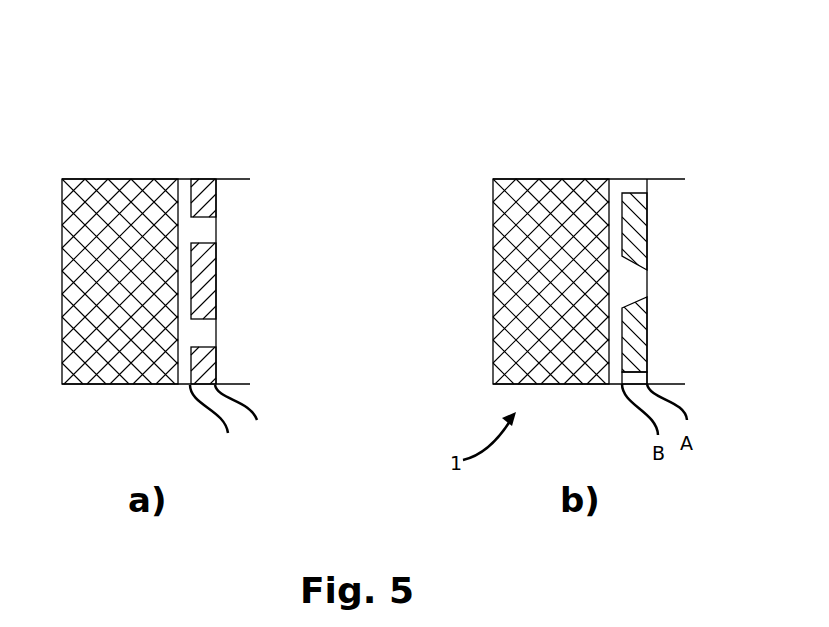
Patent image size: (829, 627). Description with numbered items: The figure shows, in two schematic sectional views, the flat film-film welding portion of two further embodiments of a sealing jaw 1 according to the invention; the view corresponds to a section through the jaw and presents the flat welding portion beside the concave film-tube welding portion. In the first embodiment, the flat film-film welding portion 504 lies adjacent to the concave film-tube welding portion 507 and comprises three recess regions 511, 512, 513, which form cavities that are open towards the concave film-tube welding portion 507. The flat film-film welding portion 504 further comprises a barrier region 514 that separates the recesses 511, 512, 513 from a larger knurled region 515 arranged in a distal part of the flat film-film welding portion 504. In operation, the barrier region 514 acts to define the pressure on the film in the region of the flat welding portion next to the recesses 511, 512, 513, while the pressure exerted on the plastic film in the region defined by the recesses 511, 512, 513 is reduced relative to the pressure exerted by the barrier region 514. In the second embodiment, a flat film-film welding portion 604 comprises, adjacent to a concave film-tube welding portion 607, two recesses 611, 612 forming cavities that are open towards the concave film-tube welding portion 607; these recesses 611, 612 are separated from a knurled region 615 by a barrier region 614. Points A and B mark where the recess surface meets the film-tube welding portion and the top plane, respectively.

The sealing jaw 1 is at (84, 416).
The flat film-film welding portion 504 is at (215, 85).
The concave film-tube welding portion 507 is at (318, 85).
The recess region 511 is at (210, 357).
The recess region 512 is at (208, 282).
The recess region 513 is at (205, 194).
The barrier region 514 is at (192, 231).
The knurled region 515 is at (115, 262).
The flat film-film welding portion 604 is at (645, 85).
The concave film-tube welding portion 607 is at (748, 85).
The recess 611 is at (637, 327).
The recess 612 is at (633, 223).
The barrier region 614 is at (627, 279).
The knurled region 615 is at (544, 262).